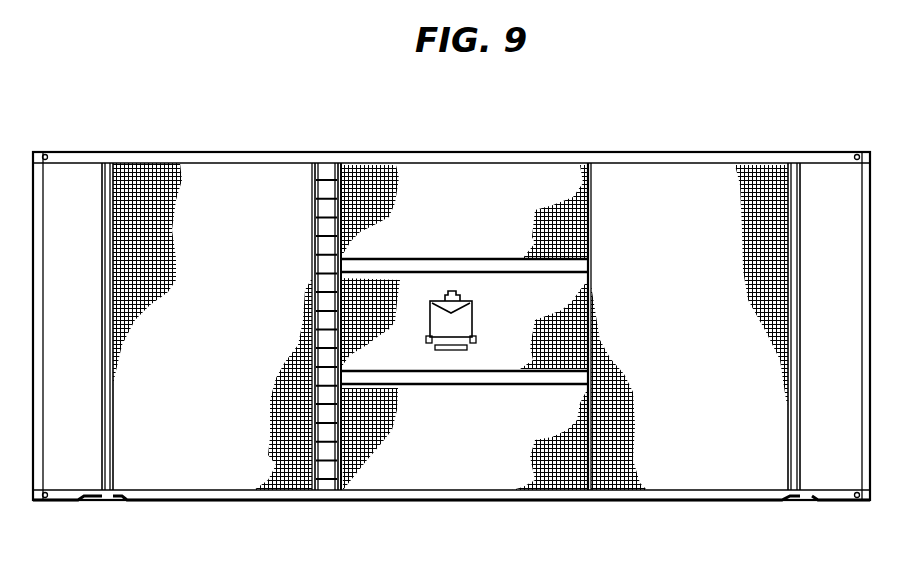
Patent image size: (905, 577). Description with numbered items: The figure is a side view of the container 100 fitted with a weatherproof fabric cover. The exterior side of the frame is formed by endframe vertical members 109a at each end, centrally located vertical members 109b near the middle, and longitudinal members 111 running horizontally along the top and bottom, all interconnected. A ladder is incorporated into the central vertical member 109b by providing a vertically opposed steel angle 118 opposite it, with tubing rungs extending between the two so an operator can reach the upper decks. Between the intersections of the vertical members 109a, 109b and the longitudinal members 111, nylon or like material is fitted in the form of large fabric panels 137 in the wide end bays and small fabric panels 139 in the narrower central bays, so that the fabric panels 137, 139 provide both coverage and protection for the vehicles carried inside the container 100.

The container 100 is at (664, 140).
The endframe vertical members 109a is at (108, 181).
The centrally located vertical members 109b is at (313, 190).
The longitudinal members 111 is at (197, 494).
The steel angle 118 is at (362, 167).
The large fabric panels 137 is at (216, 190).
The small fabric panels 139 is at (463, 182).